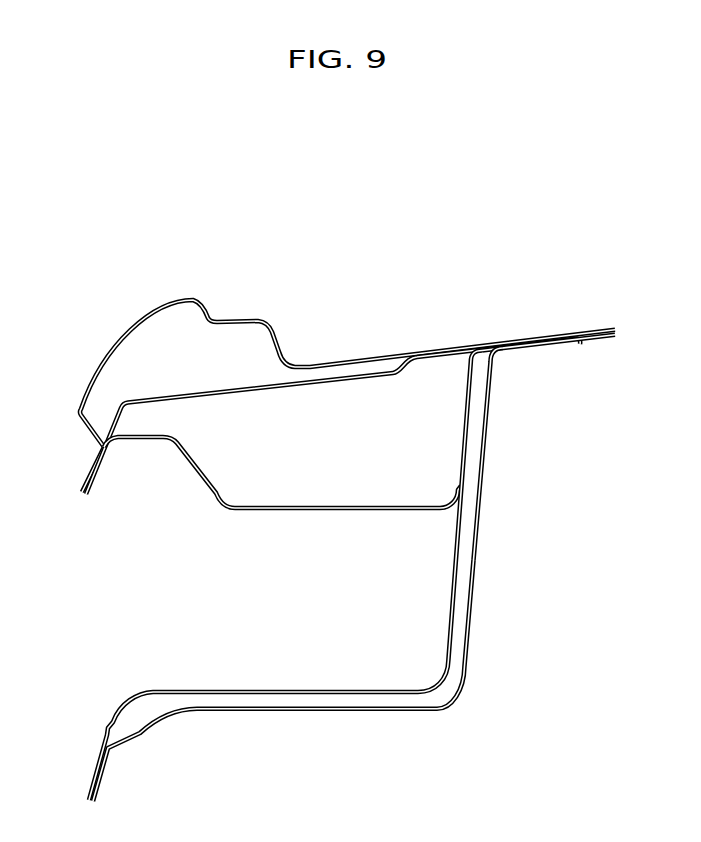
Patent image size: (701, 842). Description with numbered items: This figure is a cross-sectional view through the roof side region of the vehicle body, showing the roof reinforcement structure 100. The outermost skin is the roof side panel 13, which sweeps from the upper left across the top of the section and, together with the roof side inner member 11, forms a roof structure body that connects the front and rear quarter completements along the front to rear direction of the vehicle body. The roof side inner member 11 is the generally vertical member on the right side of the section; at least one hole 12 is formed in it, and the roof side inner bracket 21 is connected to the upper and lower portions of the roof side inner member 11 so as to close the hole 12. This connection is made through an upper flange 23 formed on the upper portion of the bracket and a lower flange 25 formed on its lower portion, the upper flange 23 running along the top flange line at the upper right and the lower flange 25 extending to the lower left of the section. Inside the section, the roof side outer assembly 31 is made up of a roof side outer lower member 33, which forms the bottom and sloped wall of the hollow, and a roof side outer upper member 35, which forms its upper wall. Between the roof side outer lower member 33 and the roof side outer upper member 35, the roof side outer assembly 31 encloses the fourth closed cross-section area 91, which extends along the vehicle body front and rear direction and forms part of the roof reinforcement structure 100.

The roof reinforcement structure 100 is at (384, 233).
The roof side inner member 11 is at (501, 466).
The hole 12 is at (474, 603).
The roof side panel 13 is at (189, 299).
The roof side inner bracket 21 is at (439, 603).
The upper flange 23 is at (582, 346).
The lower flange 25 is at (93, 782).
The roof side outer assembly 31 is at (187, 485).
The roof side outer lower member 33 is at (258, 512).
The roof side outer upper member 35 is at (199, 393).
The fourth closed cross-section area 91 is at (316, 461).